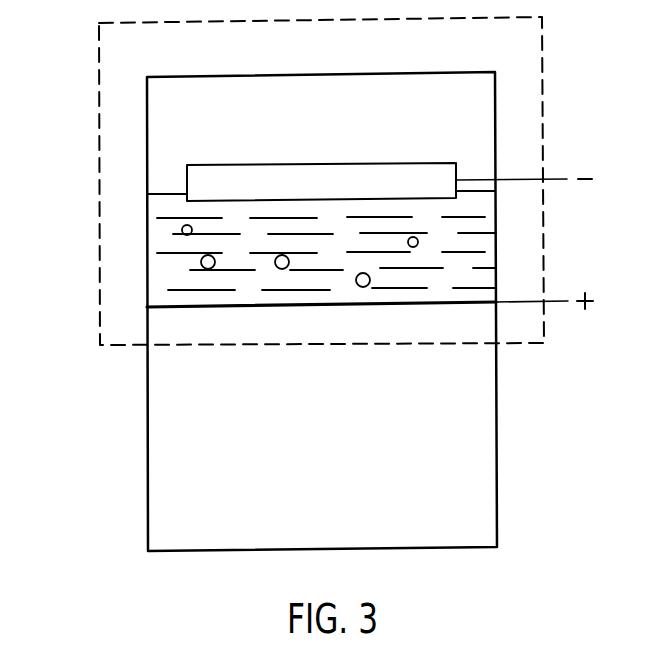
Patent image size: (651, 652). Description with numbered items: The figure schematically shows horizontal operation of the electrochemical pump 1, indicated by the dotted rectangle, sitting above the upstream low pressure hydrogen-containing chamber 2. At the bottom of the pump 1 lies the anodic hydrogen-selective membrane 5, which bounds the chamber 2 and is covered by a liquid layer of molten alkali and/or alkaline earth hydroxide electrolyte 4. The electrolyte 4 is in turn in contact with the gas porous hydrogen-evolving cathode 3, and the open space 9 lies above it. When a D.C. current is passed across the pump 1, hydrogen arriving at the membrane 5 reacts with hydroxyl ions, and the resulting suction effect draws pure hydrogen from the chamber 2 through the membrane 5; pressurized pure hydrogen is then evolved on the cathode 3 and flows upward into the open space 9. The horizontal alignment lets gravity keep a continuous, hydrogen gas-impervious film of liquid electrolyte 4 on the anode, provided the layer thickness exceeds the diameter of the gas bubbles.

The electrochemical pump 1 is at (97, 62).
The low pressure hydrogen-containing chamber 2 is at (463, 497).
The hydrogen-evolving cathode 3 is at (260, 165).
The electrolyte 4 is at (167, 275).
The anodic hydrogen-selective membrane 5 is at (473, 305).
The open space 9 is at (345, 92).